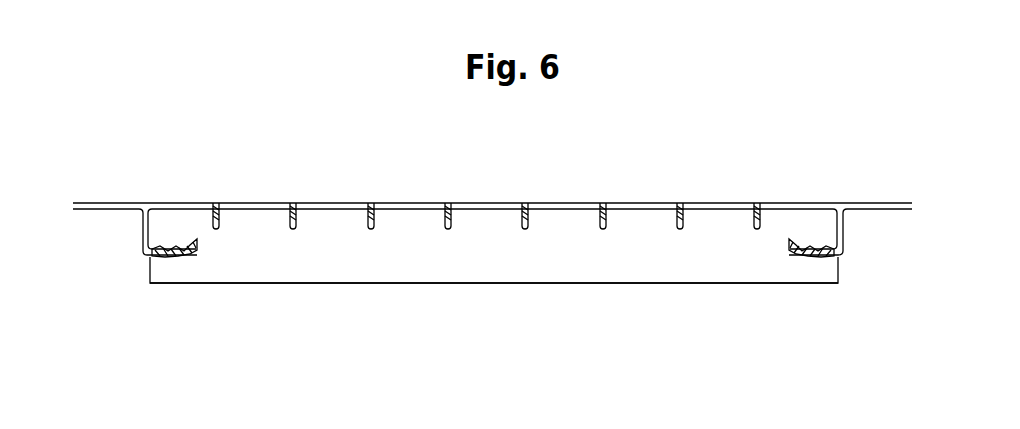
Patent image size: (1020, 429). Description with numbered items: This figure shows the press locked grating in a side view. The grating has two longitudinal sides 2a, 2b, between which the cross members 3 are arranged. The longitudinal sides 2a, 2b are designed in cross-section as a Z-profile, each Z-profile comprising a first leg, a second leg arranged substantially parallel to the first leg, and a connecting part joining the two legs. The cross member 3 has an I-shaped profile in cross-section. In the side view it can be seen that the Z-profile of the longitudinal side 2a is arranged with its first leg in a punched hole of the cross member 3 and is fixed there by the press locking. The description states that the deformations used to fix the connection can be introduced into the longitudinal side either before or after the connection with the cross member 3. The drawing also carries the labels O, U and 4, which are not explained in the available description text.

The upper part (top plate) O is at (798, 176).
The lower part (base plate) U is at (796, 309).
The longitudinal side 2a is at (118, 226).
The longitudinal side 2b is at (878, 226).
The cross member 3 is at (388, 294).
The ribs 4 is at (214, 203).